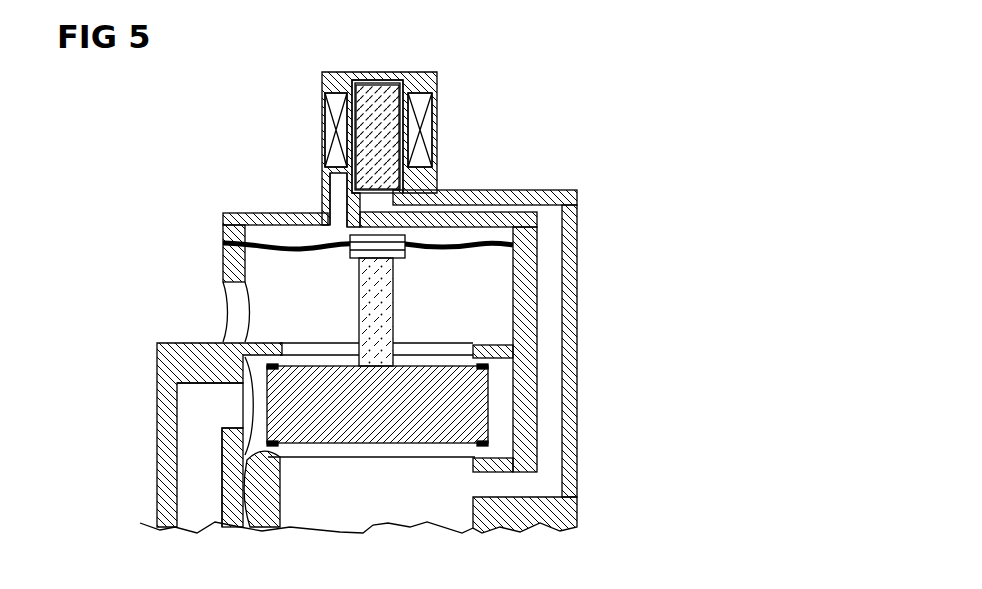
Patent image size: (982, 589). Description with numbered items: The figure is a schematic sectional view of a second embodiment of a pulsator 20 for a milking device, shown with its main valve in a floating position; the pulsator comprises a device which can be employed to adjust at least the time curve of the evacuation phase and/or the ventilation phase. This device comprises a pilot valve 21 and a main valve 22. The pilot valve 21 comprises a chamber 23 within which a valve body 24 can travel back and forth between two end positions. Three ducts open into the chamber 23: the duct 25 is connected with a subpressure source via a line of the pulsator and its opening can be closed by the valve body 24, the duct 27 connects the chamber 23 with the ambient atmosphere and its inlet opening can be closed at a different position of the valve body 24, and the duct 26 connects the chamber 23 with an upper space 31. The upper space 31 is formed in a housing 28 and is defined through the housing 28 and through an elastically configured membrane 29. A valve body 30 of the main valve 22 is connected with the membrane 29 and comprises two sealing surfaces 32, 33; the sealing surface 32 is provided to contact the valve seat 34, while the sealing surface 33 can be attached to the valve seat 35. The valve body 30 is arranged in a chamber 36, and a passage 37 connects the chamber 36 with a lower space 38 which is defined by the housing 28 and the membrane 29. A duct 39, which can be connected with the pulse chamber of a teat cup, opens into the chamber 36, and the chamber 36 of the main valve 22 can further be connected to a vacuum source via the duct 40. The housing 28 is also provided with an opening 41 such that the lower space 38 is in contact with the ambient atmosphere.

The pulsator 20 is at (670, 100).
The pilot valve 21 is at (437, 75).
The main valve 22 is at (175, 317).
The chamber 23 is at (327, 82).
The valve body 24 is at (390, 125).
The duct 25 is at (553, 330).
The duct 26 is at (342, 200).
The duct 27 is at (380, 76).
The housing 28 is at (223, 262).
The membrane 29 is at (434, 244).
The valve body 30 is at (473, 402).
The upper space 31 is at (243, 213).
The sealing surface 32 is at (478, 446).
The sealing surface 33 is at (512, 356).
The valve seat 34 is at (257, 527).
The valve seat 35 is at (240, 365).
The chamber 36 is at (502, 428).
The passage 37 is at (437, 352).
The lower space 38 is at (480, 270).
The duct 39 is at (192, 438).
The duct 40 is at (427, 495).
The opening 41 is at (237, 313).